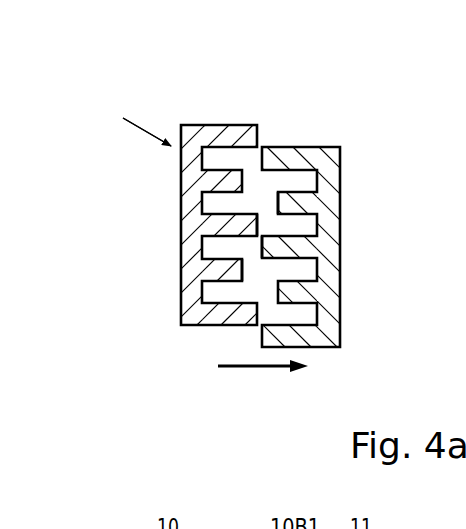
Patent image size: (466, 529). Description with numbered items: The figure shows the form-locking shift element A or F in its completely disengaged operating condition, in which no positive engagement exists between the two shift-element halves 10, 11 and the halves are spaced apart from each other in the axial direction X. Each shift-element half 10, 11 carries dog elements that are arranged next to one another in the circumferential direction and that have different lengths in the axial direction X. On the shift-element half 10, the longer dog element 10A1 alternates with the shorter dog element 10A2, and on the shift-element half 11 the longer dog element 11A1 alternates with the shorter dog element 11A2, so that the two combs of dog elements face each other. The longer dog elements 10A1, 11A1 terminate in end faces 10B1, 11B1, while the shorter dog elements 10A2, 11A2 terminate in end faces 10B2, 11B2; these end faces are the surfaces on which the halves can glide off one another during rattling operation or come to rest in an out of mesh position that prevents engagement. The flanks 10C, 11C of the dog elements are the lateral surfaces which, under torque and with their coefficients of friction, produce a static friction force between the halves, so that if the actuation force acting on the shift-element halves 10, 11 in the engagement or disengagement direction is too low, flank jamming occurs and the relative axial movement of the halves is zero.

The shift-element half 10 is at (189, 120).
The shift-element half 11 is at (329, 144).
The dog element 10A1 is at (209, 316).
The dog element 10A2 is at (215, 183).
The end face of the dog element 10B1 is at (257, 226).
The end face of the dog element 10B2 is at (242, 273).
The flank of the dog element 10C is at (213, 280).
The dog element 11A1 is at (282, 162).
The dog element 11A2 is at (297, 203).
The end face of the dog element 11B1 is at (263, 246).
The end face of the dog element 11B2 is at (278, 201).
The flank of the dog element 11C is at (285, 330).
The shift element A is at (122, 128).
The shift element F is at (147, 132).
The axial direction X is at (252, 370).